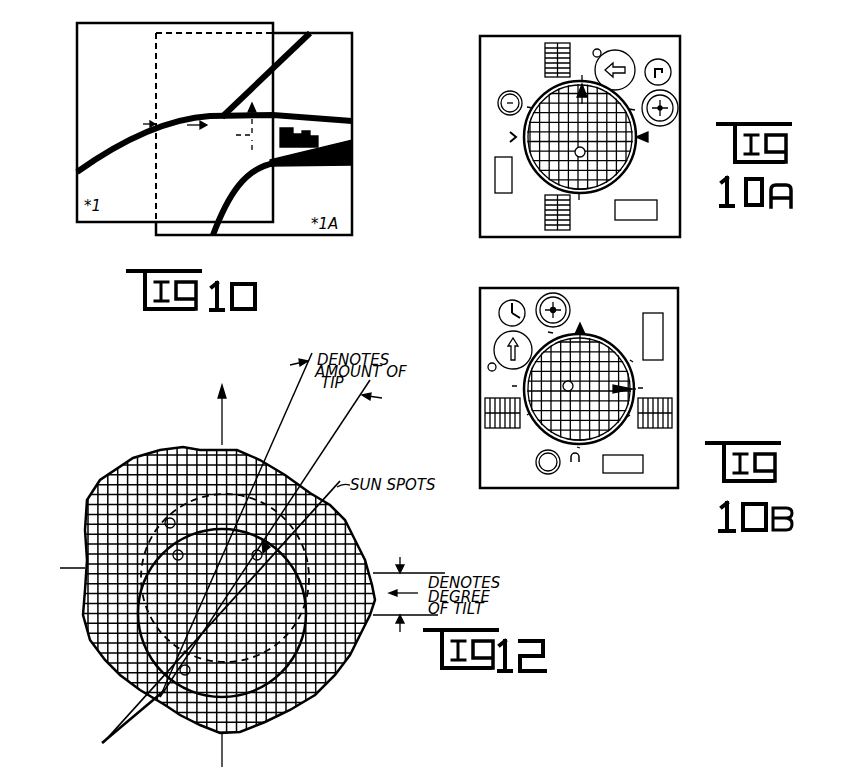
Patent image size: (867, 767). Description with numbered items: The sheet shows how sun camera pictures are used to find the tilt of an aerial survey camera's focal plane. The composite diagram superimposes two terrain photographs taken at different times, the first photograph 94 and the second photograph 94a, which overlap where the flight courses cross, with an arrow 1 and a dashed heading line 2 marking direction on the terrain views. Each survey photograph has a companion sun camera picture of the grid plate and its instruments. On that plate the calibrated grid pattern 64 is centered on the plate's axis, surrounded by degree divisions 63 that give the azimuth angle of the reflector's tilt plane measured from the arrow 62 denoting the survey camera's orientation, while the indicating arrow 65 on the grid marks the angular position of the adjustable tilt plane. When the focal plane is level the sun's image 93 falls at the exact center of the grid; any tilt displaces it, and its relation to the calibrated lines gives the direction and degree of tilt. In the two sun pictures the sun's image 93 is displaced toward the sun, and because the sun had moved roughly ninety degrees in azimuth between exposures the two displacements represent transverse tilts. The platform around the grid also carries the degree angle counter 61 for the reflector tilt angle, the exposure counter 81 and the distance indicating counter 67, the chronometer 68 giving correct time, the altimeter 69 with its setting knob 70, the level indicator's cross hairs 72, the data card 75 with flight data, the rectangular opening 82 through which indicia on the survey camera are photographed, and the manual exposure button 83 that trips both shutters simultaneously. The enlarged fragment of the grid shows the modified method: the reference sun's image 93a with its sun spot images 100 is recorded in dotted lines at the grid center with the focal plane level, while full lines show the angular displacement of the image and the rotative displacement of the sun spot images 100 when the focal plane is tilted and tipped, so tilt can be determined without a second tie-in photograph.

In FIG. 10, the elongated rectangular frame 1 is at (182, 130).
In FIG. 10, the reference heading line 2 is at (238, 126).
In FIG. 10, the photograph 94 is at (113, 213).
In FIG. 10, the photograph 94a is at (285, 228).
In FIG. 10A, the degree angle counter 61 is at (548, 41).
In FIG. 10B, the degree angle counter 61 is at (487, 417).
In FIG. 10A, the exposure counter 81 is at (568, 43).
In FIG. 10B, the exposure counter 81 is at (485, 402).
In FIG. 10A, the setting knob 70 is at (597, 49).
In FIG. 10B, the setting knob 70 is at (488, 367).
In FIG. 10A, the altimeter 69 is at (612, 58).
In FIG. 10B, the altimeter 69 is at (494, 343).
In FIG. 10A, the chronometer 68 is at (670, 70).
In FIG. 10B, the chronometer 68 is at (505, 303).
In FIG. 10A, the cross hairs 72 is at (677, 113).
In FIG. 10B, the cross hairs 72 is at (553, 301).
In FIG. 10A, the arrow 62 is at (648, 137).
In FIG. 10B, the arrow 62 is at (582, 323).
In FIG. 10A, the grid pattern 64 is at (622, 152).
In FIG. 10B, the grid pattern 64 is at (617, 427).
In FIG. 12, the grid pattern 64 is at (320, 673).
In FIG. 10A, the degree divisions 63 is at (614, 186).
In FIG. 10B, the degree divisions 63 is at (611, 322).
In FIG. 10A, the rectangular opening 82 is at (657, 212).
In FIG. 10B, the rectangular opening 82 is at (655, 328).
In FIG. 10A, the exposure button 83 is at (498, 103).
In FIG. 10B, the exposure button 83 is at (548, 474).
In FIG. 10A, the indicating arrow 65 is at (576, 96).
In FIG. 10B, the indicating arrow 65 is at (637, 383).
In FIG. 12, the indicating arrow 65 is at (228, 390).
In FIG. 10A, the data card 75 is at (495, 180).
In FIG. 10B, the data card 75 is at (638, 471).
In FIG. 10A, the sun's image 93 is at (580, 152).
In FIG. 10B, the sun's image 93 is at (568, 386).
In FIG. 12, the sun's image 93 is at (300, 648).
In FIG. 10A, the distance indicating counter 67 is at (548, 237).
In FIG. 10B, the distance indicating counter 67 is at (672, 420).
In FIG. 12, the sun spot images 100 is at (326, 500).
In FIG. 12, the reflected sun's image 93a is at (353, 525).